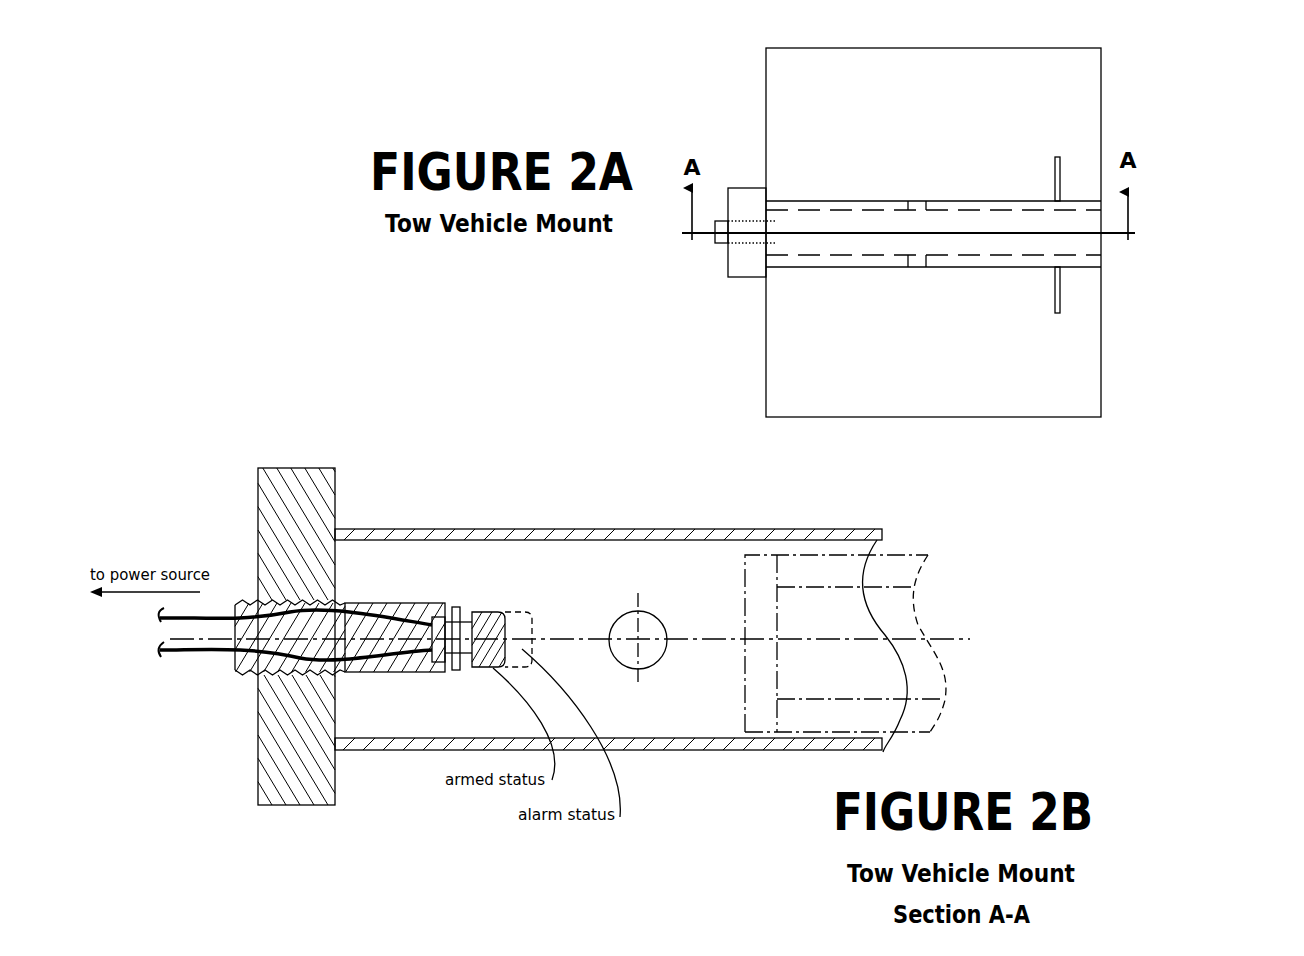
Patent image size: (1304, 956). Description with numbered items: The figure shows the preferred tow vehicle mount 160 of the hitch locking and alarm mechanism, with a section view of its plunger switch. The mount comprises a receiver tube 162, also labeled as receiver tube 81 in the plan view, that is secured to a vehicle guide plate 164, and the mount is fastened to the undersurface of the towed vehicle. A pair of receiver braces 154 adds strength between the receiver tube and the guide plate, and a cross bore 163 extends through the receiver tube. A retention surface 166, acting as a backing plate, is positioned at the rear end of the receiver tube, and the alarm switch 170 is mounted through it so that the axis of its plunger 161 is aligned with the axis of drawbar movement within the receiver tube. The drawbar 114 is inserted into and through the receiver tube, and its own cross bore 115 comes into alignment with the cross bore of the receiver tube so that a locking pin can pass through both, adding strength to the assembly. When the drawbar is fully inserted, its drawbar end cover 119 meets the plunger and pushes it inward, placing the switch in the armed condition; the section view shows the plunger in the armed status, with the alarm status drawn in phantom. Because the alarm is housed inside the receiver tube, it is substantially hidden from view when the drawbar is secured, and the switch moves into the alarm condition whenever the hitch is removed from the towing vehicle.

In FIG. 2A, the guide plate 164 is at (826, 101).
In FIG. 2A, the receiver brace 154 is at (1062, 166).
In FIG. 2A, the receiver tube 81 is at (1090, 244).
In FIG. 2A, the tow vehicle mount 160 is at (720, 240).
In FIG. 2A, the retention surface 166 is at (747, 265).
In FIG. 2B, the retention surface 166 is at (298, 510).
In FIG. 2A, the cross bore 163 is at (917, 260).
In FIG. 2B, the receiver tube 162 is at (547, 562).
In FIG. 2B, the plunger 161 is at (497, 617).
In FIG. 2B, the cross bore 115 is at (622, 624).
In FIG. 2B, the drawbar end cover 119 is at (753, 590).
In FIG. 2B, the drawbar 114 is at (905, 710).
In FIG. 2B, the alarm switch 170 is at (420, 638).